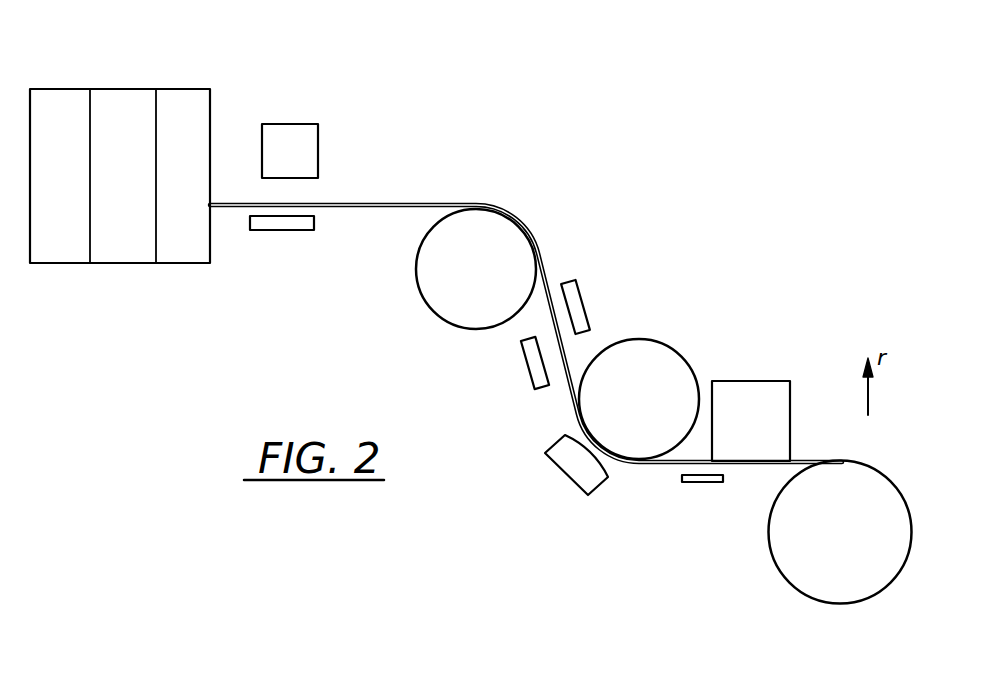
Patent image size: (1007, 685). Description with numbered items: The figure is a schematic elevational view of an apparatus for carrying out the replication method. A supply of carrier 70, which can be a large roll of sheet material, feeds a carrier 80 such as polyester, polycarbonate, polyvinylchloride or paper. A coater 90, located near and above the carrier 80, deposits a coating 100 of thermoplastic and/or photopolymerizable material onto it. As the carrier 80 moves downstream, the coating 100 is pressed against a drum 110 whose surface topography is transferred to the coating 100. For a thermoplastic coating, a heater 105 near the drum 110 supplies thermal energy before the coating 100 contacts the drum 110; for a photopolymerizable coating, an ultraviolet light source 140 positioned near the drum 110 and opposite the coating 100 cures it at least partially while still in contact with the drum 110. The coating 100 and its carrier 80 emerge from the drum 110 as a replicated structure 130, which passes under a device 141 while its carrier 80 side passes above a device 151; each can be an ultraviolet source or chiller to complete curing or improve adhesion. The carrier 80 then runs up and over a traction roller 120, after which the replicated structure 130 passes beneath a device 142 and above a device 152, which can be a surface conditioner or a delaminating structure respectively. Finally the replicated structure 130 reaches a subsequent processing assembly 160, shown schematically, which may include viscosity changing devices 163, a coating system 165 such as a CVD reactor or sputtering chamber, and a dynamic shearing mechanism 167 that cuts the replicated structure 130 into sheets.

The subsequent processing assembly 160 is at (158, 32).
The dynamic shearing mechanism 167 is at (78, 160).
The coating system 165 is at (138, 160).
The viscosity changing devices 163 is at (200, 160).
The device 142 is at (327, 90).
The device 152 is at (260, 230).
The replicated structure 130 is at (428, 160).
The traction roller 120 is at (432, 303).
The device 141 is at (583, 293).
The device 151 is at (528, 365).
The drum 110 is at (643, 338).
The ultraviolet light source 140 is at (568, 478).
The coating 100 is at (697, 460).
The coater 90 is at (782, 381).
The carrier 80 is at (807, 462).
The heater 105 is at (707, 482).
The supply of carrier 70 is at (783, 558).